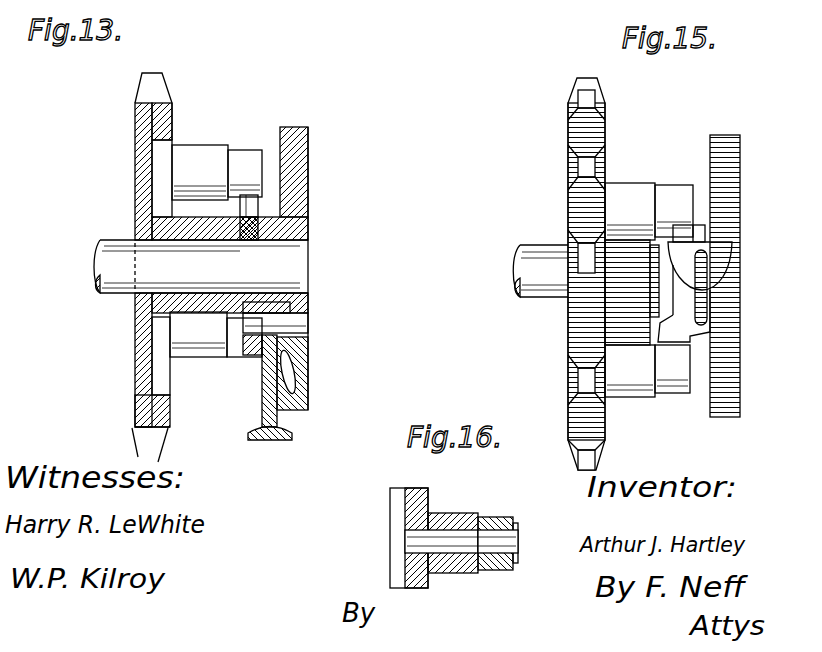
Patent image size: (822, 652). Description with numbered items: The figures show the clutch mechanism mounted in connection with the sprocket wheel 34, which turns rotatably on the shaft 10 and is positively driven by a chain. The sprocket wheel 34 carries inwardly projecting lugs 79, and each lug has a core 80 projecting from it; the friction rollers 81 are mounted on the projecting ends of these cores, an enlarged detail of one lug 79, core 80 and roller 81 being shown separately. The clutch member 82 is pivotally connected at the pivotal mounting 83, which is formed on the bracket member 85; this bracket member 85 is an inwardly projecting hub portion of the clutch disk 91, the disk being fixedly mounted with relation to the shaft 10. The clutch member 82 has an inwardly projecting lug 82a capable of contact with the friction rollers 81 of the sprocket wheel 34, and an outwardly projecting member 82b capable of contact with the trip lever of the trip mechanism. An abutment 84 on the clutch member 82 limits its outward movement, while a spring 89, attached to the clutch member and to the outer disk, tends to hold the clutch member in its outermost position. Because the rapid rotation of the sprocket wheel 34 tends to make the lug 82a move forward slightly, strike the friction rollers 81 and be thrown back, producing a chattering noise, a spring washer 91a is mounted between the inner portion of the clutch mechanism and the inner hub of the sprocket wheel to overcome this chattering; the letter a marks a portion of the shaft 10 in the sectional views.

In FIG. 13, the shaft 10 is at (108, 268).
In FIG. 15, the shaft 10 is at (522, 270).
In FIG. 13, the sprocket wheel 34 is at (135, 127).
In FIG. 15, the sprocket wheel 34 is at (605, 143).
In FIG. 16, the sprocket wheel 34 is at (392, 527).
In FIG. 13, the inwardly projecting lugs 79 is at (198, 147).
In FIG. 15, the inwardly projecting lugs 79 is at (629, 183).
In FIG. 16, the inwardly projecting lugs 79 is at (450, 516).
In FIG. 16, the core 80 is at (500, 539).
In FIG. 13, the friction rollers 81 is at (240, 155).
In FIG. 15, the friction rollers 81 is at (673, 185).
In FIG. 16, the friction rollers 81 is at (497, 514).
In FIG. 15, the clutch member 82 is at (712, 296).
In FIG. 15, the inwardly projecting lug 82a is at (690, 338).
In FIG. 13, the outwardly projecting member 82b is at (268, 441).
In FIG. 15, the outwardly projecting member 82b is at (720, 252).
In FIG. 13, the pivotal mounting 83 is at (307, 320).
In FIG. 15, the abutment 84 is at (696, 238).
In FIG. 13, the bracket member 85 is at (275, 233).
In FIG. 15, the bracket member 85 is at (665, 267).
In FIG. 13, the spring 89 is at (308, 393).
In FIG. 13, the clutch disk 91 is at (300, 128).
In FIG. 15, the clutch disk 91 is at (722, 134).
In FIG. 15, the spring washer 91a is at (712, 311).
In FIG. 13, the shaft portion a is at (88, 248).
In FIG. 15, the shaft portion a is at (510, 252).